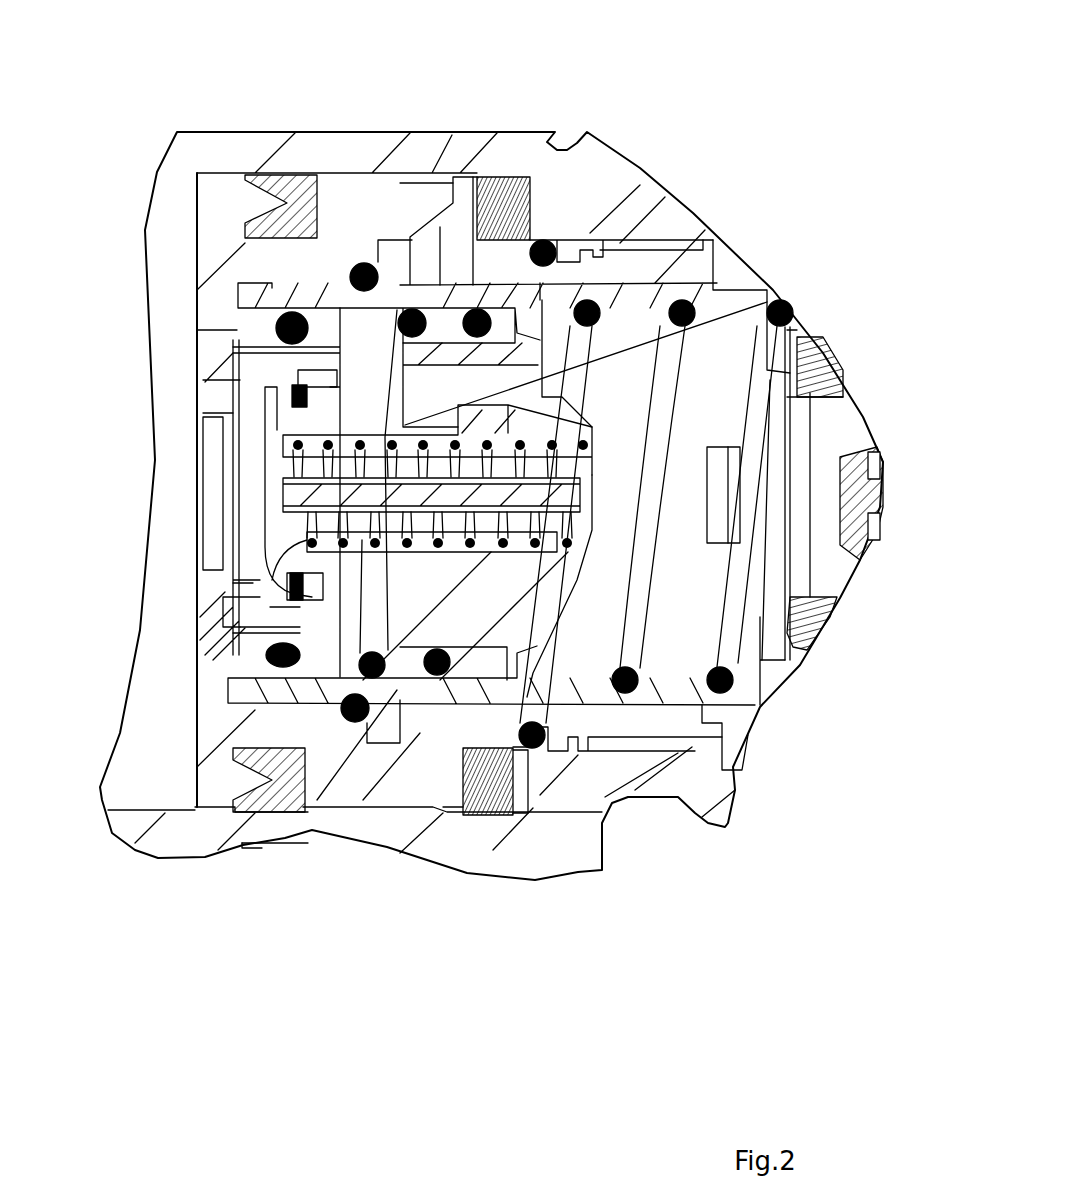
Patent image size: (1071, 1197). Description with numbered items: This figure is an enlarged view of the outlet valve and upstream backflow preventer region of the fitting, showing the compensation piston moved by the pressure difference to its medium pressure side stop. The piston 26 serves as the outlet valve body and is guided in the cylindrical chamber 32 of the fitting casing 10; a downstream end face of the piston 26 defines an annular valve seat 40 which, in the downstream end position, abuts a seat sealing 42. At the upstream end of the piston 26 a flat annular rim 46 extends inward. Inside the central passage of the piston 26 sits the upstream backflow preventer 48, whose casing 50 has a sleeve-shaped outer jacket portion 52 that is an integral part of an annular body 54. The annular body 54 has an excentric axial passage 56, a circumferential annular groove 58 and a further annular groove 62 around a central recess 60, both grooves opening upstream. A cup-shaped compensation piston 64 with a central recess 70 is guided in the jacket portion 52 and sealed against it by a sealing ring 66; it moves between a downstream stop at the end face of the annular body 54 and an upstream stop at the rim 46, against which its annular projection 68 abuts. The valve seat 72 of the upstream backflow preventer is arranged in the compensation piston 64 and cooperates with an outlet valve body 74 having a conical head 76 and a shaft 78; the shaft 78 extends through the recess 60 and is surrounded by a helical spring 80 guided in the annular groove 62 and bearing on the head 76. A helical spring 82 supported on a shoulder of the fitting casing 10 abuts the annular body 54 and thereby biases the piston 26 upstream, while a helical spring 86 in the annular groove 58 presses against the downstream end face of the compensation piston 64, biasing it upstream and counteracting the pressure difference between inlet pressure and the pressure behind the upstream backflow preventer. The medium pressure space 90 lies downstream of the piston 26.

The fitting casing 10 is at (257, 152).
The piston 26 is at (453, 178).
The cylindrical chamber 32 is at (183, 274).
The annular valve seat 40 is at (413, 793).
The seat sealing 42 is at (487, 710).
The flat annular rim 46 is at (235, 370).
The upstream backflow preventer 48 is at (229, 483).
The casing 50 is at (300, 610).
The jacket portion 52 is at (300, 290).
The annular body 54 is at (568, 690).
The excentric axial passage 56 is at (518, 372).
The annular groove 58 is at (528, 210).
The central recess 60 is at (585, 512).
The annular groove 62 is at (795, 310).
The compensation piston 64 is at (390, 295).
The sealing ring 66 is at (397, 310).
The annular projection 68 is at (290, 598).
The central recess 70 is at (245, 545).
The valve seat 72 is at (297, 690).
The outlet valve body 74 is at (262, 500).
The conical head 76 is at (260, 493).
The shaft 78 is at (300, 475).
The helical spring 80 is at (540, 375).
The helical spring 82 is at (730, 690).
The helical spring 86 is at (570, 265).
The medium pressure space 90 is at (780, 397).